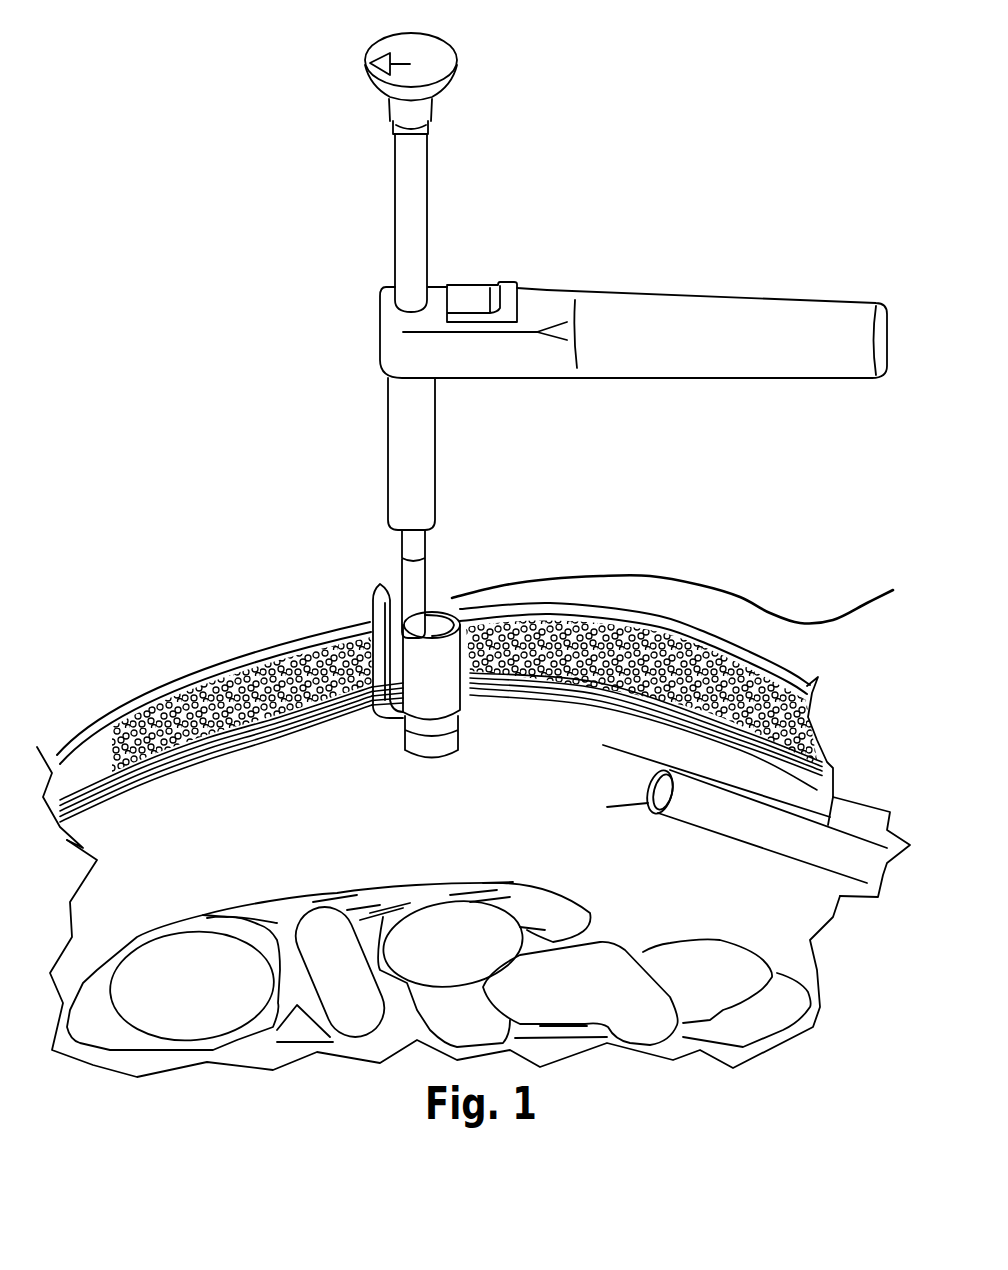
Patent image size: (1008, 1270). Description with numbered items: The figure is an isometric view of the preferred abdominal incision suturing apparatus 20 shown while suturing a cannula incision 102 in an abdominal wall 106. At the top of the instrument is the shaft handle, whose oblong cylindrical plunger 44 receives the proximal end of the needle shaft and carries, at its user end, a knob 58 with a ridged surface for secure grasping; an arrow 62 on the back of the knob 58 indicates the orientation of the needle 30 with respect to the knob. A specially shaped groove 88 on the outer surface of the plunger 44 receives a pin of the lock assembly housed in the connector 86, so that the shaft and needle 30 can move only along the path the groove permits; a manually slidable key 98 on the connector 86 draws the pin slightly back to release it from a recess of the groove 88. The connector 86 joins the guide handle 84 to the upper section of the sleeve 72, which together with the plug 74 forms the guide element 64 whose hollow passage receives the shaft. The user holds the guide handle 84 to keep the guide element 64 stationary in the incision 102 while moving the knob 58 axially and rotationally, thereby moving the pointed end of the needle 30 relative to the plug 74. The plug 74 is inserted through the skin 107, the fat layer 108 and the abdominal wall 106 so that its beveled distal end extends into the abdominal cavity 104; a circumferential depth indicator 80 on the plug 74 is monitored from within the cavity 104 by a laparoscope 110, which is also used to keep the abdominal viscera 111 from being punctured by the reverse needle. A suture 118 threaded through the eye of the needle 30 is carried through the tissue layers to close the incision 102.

The suturing apparatus 20 is at (292, 241).
The knob 58 is at (459, 72).
The arrow 62 is at (378, 56).
The groove 88 is at (372, 138).
The plunger 44 is at (428, 168).
The connector 86 is at (403, 348).
The key 98 is at (504, 281).
The guide handle 84 is at (683, 380).
The sleeve 72 is at (388, 428).
The guide element 64 is at (481, 526).
The plug 74 is at (460, 714).
The depth indicator 80 is at (410, 734).
The needle 30 is at (370, 614).
The suture 118 is at (652, 572).
The skin 107 is at (200, 667).
The fat layer 108 is at (94, 748).
The abdominal wall 106 is at (127, 787).
The incision 102 is at (489, 704).
The laparoscope 110 is at (829, 823).
The abdominal cavity 104 is at (228, 866).
The abdominal viscera 111 is at (621, 921).